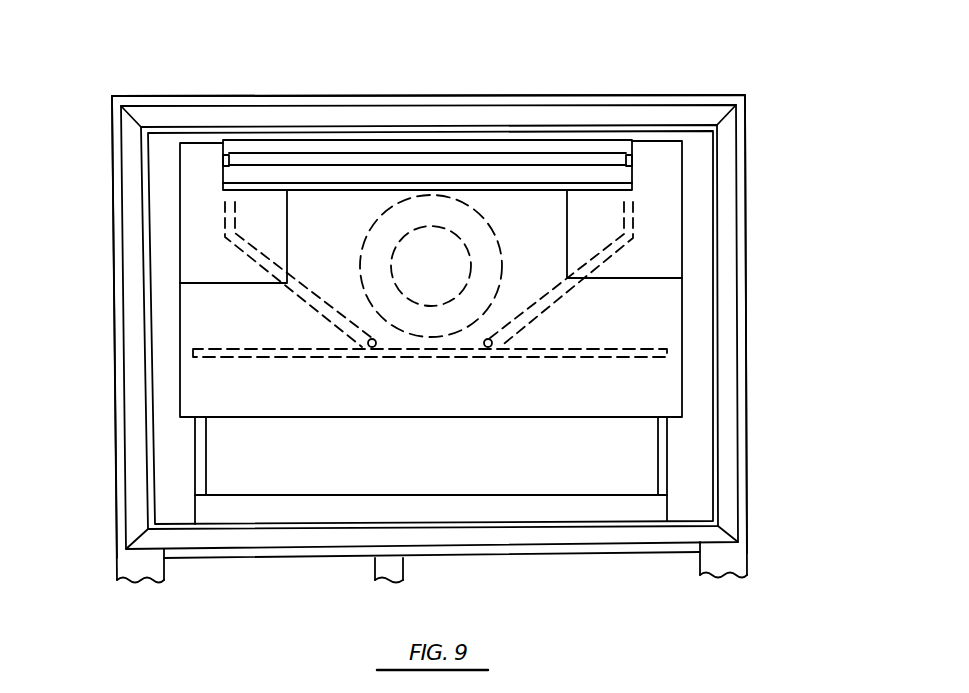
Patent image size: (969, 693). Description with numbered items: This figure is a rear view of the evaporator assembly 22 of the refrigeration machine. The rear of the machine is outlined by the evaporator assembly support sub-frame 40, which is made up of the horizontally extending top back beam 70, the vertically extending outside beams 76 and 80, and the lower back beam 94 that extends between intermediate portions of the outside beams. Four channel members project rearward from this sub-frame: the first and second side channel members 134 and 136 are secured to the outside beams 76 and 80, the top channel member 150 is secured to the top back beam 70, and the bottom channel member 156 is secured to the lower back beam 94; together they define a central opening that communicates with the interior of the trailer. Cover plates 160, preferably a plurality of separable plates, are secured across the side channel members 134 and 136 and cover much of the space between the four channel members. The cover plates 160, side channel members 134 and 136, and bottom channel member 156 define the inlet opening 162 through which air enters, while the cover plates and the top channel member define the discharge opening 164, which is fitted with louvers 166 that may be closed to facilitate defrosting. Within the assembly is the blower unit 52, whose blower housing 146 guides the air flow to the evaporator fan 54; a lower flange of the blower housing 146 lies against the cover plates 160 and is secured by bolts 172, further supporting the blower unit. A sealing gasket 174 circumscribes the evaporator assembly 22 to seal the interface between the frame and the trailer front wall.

The evaporator assembly 22 is at (695, 52).
The evaporator assembly support sub-frame 40 is at (170, 72).
The blower unit 52 is at (286, 313).
The evaporator fan 54 is at (368, 229).
The top back beam 70 is at (303, 97).
The outside beam 76 is at (746, 180).
The outside beam 80 is at (113, 222).
The lower back beam 94 is at (553, 553).
The first side channel member 134 is at (163, 470).
The second side channel member 136 is at (695, 458).
The blower housing 146 is at (550, 300).
The top channel member 150 is at (652, 133).
The bottom channel member 156 is at (255, 512).
The cover plates 160 is at (431, 279).
The inlet opening 162 is at (431, 470).
The discharge opening 164 is at (443, 175).
The louvers 166 is at (363, 152).
The bolts 172 is at (368, 347).
The sealing gasket 174 is at (727, 302).